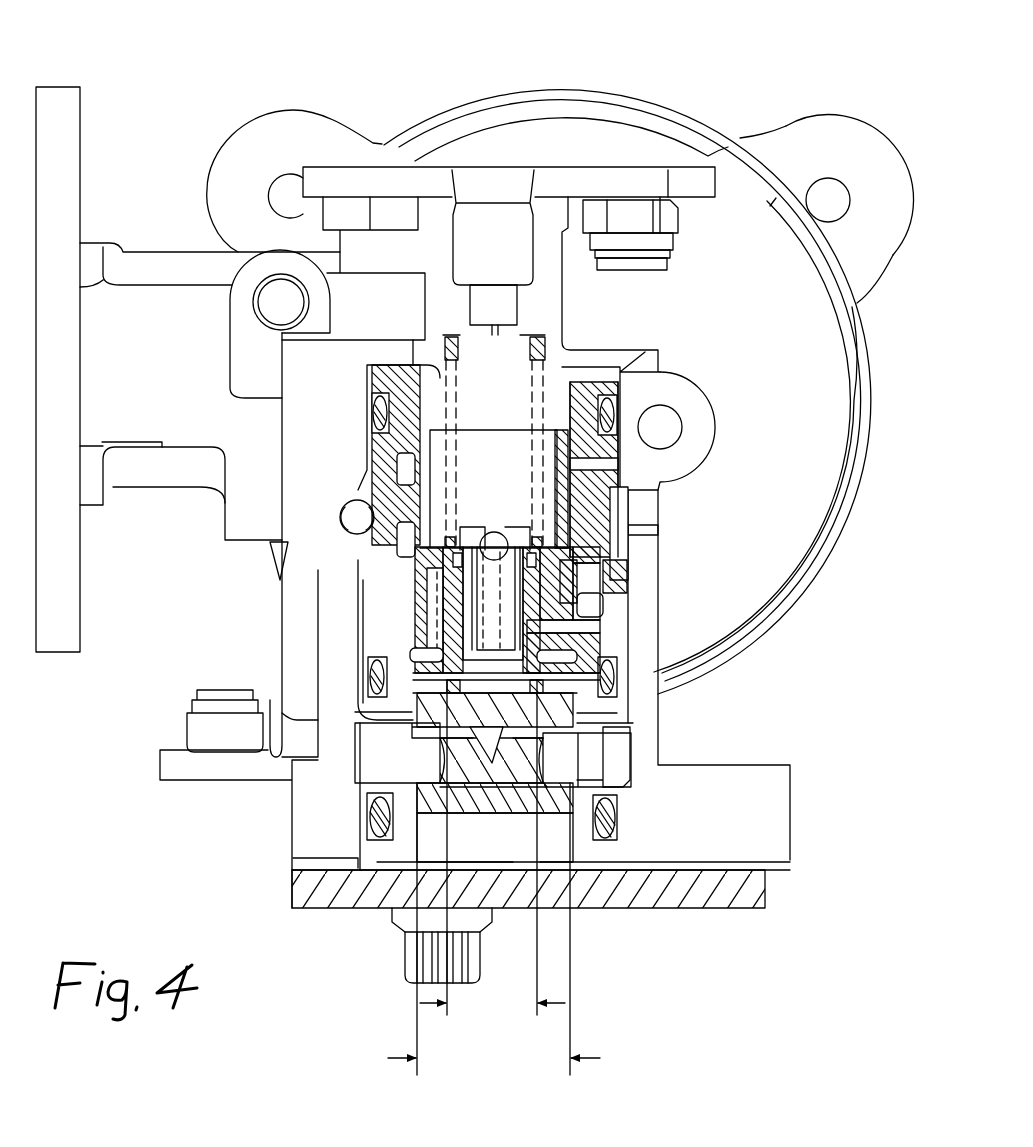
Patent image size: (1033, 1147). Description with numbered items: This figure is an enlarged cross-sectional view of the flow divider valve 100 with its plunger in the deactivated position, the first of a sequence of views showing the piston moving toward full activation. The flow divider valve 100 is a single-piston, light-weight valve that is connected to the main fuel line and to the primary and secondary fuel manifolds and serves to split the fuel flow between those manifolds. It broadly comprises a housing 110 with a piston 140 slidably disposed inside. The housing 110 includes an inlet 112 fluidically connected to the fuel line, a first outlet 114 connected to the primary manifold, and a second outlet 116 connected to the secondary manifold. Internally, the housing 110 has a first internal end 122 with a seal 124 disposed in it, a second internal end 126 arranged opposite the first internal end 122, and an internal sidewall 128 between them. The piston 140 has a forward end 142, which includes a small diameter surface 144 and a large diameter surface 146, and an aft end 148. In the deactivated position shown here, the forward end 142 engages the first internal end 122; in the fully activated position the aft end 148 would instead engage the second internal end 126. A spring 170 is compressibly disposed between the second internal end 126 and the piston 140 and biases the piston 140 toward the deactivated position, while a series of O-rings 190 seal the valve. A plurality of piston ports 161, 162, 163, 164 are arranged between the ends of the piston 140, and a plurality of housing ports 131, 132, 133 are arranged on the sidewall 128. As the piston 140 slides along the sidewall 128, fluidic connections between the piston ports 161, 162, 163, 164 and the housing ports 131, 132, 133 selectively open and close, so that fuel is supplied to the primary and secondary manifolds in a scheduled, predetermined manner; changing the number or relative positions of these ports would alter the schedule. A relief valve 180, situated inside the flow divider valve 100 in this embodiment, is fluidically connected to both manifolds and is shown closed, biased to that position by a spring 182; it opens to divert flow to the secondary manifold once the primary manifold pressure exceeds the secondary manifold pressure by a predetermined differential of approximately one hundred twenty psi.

The flow divider valve 100 is at (240, 90).
The housing 110 is at (345, 706).
The inlet 112 is at (437, 755).
The first outlet 114 is at (500, 333).
The second outlet 116 is at (660, 532).
The first internal end 122 is at (410, 640).
The seal 124 is at (560, 687).
The second internal end 126 is at (625, 392).
The internal sidewall 128 is at (400, 605).
The housing port 131 is at (370, 575).
The housing port 132 is at (615, 686).
The housing port 133 is at (660, 495).
The piston 140 is at (415, 608).
The forward end 142 is at (498, 685).
The small diameter surface 144 is at (492, 850).
The large diameter surface 146 is at (525, 1051).
The aft end 148 is at (430, 360).
The piston port 161 is at (375, 590).
The piston port 162 is at (430, 530).
The piston port 163 is at (565, 600).
The piston port 164 is at (563, 532).
The spring 170 is at (622, 455).
The relief valve 180 is at (482, 527).
The spring 182 is at (560, 640).
The O-rings 190 is at (620, 400).